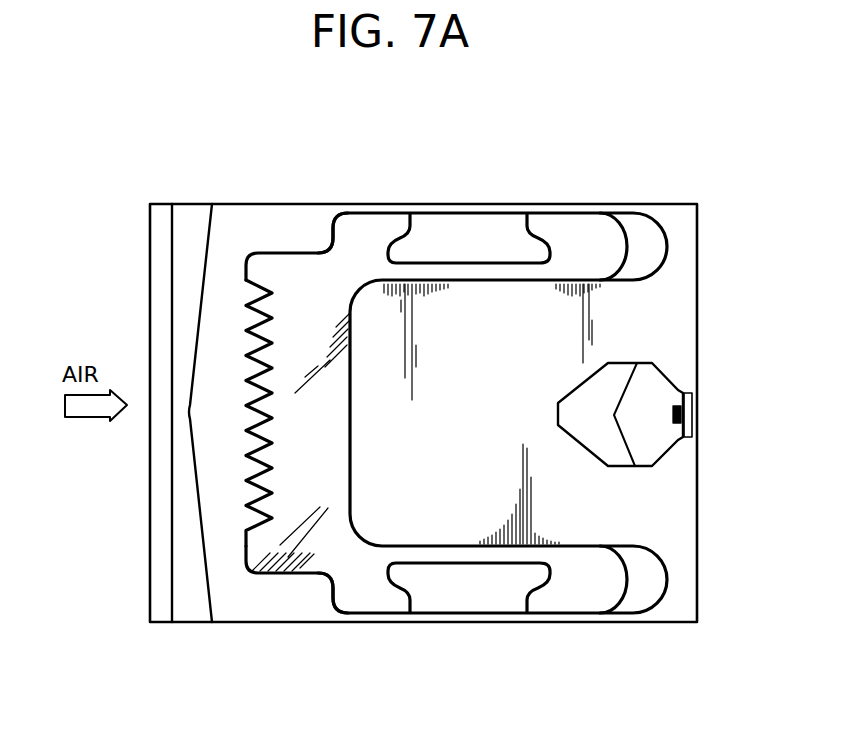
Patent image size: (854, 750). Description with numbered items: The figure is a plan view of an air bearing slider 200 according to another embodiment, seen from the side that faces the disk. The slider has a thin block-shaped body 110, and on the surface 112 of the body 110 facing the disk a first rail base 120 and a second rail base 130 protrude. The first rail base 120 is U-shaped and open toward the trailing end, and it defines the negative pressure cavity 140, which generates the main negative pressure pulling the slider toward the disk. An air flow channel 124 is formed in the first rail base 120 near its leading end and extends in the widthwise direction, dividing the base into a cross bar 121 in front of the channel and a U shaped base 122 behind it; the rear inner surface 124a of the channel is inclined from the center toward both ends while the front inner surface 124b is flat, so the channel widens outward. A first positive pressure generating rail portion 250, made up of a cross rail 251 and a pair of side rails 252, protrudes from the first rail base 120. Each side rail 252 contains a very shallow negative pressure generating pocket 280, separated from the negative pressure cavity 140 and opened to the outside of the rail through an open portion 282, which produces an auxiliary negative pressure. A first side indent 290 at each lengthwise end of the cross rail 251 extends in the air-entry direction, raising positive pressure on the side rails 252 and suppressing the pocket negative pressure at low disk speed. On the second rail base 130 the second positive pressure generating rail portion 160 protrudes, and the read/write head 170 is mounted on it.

The body 110 is at (697, 268).
The surface of the body facing the disk 112 is at (680, 323).
The first rail base 120 is at (152, 437).
The cross bar 121 is at (162, 610).
The U shaped base 122 is at (152, 412).
The air flow channel 124 is at (152, 376).
The rear inner surface of the air flow channel 124a is at (200, 212).
The front inner surface of the air flow channel 124b is at (176, 276).
The second rail base 130 is at (603, 455).
The negative pressure cavity 140 is at (505, 438).
The second positive pressure generating rail portion 160 is at (643, 393).
The read/write head 170 is at (682, 415).
The air bearing slider 200 is at (450, 379).
The first positive pressure generating rail portion 250 is at (472, 378).
The cross rail 251 is at (317, 317).
The side rails 252 is at (603, 248).
The negative pressure generating pocket 280 is at (481, 257).
The open portion 282 is at (422, 620).
The first side indent 290 is at (318, 243).